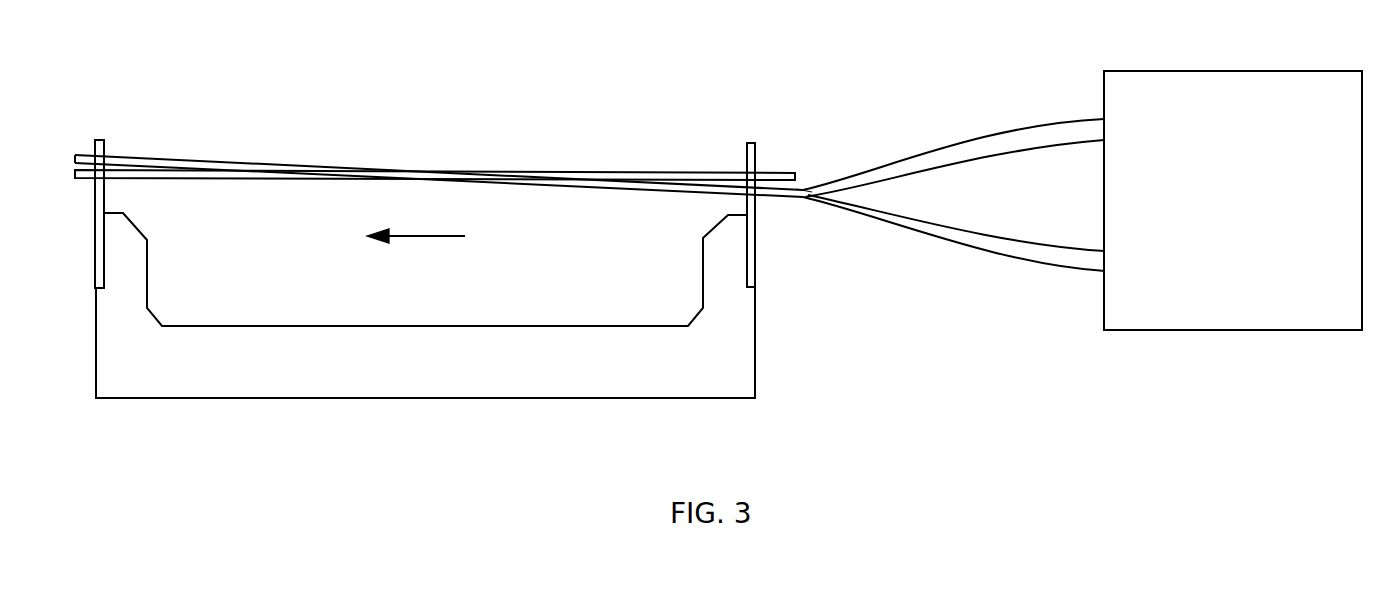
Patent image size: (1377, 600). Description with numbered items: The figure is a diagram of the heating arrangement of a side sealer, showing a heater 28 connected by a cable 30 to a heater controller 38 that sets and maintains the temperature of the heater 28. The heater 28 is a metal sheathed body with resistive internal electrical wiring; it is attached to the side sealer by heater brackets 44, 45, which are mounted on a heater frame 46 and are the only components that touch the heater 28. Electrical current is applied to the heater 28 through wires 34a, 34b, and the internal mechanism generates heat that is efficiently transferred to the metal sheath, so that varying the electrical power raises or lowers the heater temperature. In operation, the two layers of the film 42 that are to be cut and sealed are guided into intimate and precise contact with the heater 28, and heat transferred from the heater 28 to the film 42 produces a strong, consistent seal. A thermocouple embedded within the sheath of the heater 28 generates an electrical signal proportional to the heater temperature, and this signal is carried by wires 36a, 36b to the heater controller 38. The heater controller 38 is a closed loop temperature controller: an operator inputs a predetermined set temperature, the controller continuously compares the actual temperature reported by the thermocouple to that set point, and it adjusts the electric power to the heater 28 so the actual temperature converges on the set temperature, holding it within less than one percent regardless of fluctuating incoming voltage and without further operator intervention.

The heater 28 is at (132, 157).
The cable 30 is at (802, 190).
The wire 34a is at (1018, 128).
The wire 34b is at (987, 155).
The wire 36a is at (938, 227).
The wire 36b is at (997, 258).
The heater controller 38 is at (1218, 248).
The film 42 is at (638, 172).
The heater bracket 44 is at (95, 192).
The heater bracket 45 is at (755, 220).
The heater frame 46 is at (755, 350).